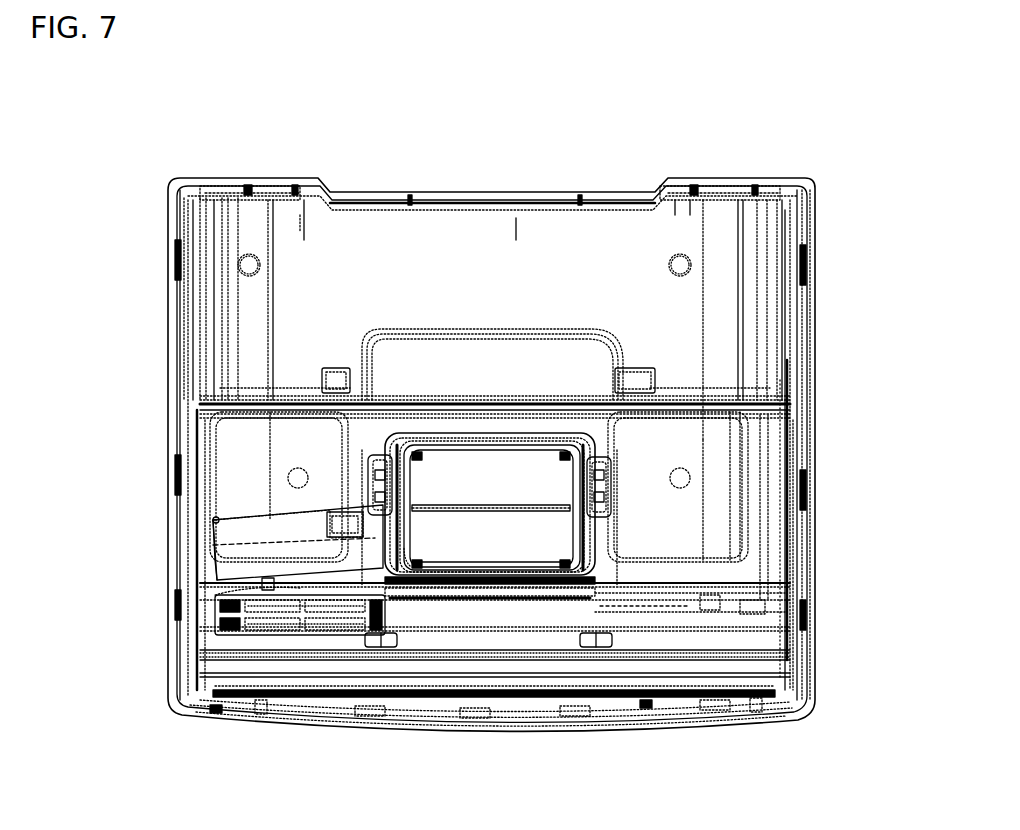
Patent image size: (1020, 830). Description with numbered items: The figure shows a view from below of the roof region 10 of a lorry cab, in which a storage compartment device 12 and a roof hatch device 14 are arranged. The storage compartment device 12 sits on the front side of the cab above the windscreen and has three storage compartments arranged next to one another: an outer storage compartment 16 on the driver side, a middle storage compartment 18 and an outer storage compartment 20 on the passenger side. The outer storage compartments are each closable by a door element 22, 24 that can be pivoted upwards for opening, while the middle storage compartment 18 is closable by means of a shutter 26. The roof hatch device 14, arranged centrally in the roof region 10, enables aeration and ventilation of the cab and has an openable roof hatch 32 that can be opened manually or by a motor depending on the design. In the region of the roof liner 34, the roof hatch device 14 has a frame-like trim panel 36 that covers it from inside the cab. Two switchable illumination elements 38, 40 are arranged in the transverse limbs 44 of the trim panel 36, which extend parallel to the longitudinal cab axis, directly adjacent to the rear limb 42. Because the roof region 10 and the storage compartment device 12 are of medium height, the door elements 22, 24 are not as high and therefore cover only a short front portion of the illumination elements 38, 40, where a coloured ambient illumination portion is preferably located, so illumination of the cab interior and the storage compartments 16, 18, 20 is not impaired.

The roof region 10 is at (490, 64).
The storage compartment device 12 is at (737, 580).
The roof hatch device 14 is at (372, 438).
The outer storage compartment 16 is at (247, 580).
The middle storage compartment 18 is at (483, 555).
The outer storage compartment 20 is at (713, 577).
The door element 22 is at (237, 540).
The door element 24 is at (805, 590).
The shutter 26 is at (450, 583).
The roof hatch 32 is at (585, 440).
The roof liner 34 is at (267, 272).
The trim panel 36 is at (548, 468).
The illumination element 38 is at (360, 490).
The illumination element 40 is at (655, 532).
The rear limb 42 is at (498, 445).
The transverse limbs 44 is at (605, 477).